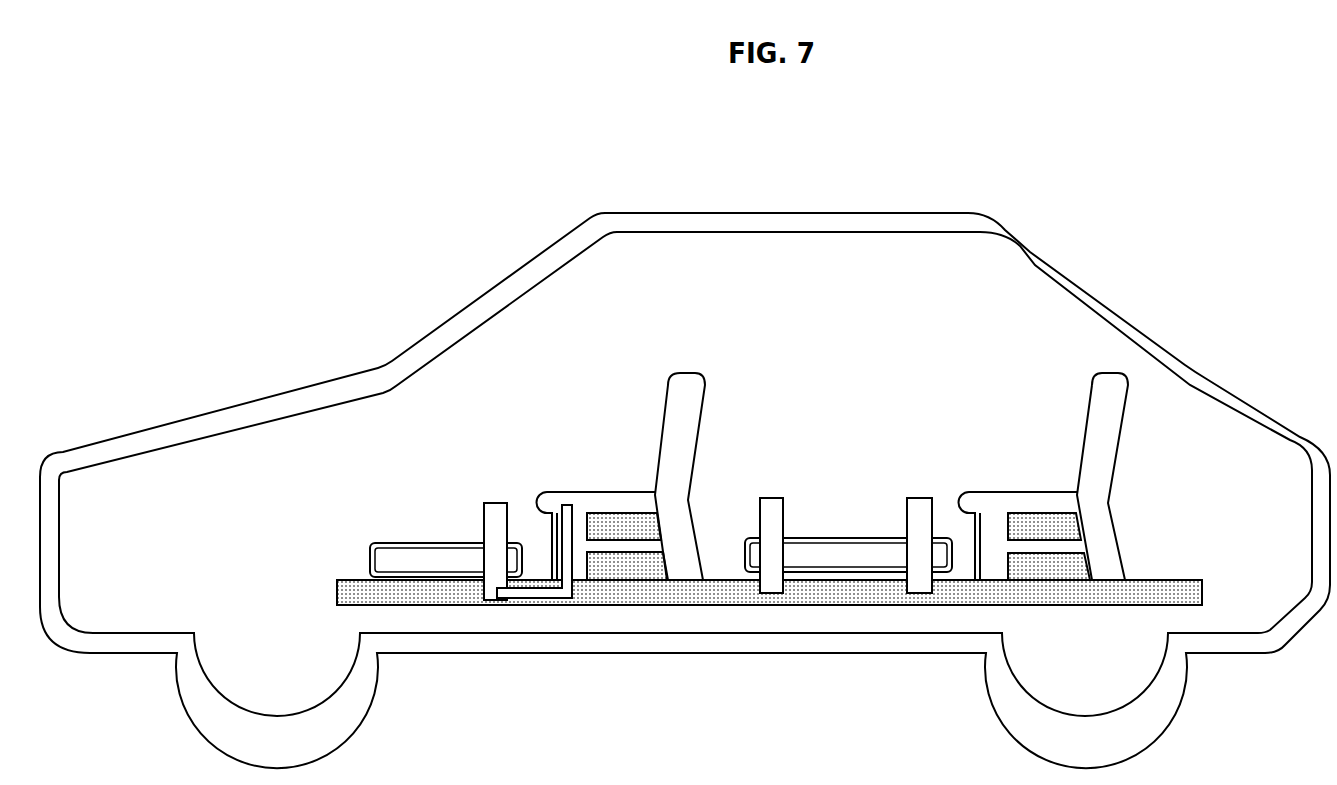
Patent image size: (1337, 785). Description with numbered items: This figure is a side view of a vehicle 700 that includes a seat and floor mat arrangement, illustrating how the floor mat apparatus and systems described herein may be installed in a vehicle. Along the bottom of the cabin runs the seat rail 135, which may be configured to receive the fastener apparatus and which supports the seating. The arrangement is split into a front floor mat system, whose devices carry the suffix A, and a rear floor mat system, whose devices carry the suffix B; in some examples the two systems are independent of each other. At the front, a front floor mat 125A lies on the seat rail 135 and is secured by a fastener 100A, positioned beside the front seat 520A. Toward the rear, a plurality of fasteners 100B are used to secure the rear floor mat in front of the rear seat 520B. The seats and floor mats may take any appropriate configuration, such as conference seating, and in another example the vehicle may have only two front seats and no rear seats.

The vehicle 700 is at (185, 220).
The seat rail 135 is at (982, 608).
The front floor mat 125A is at (383, 540).
The front fastener 100A is at (497, 500).
The rear fasteners 100B is at (917, 497).
The front seat 520A is at (688, 368).
The rear seat 520B is at (1083, 388).